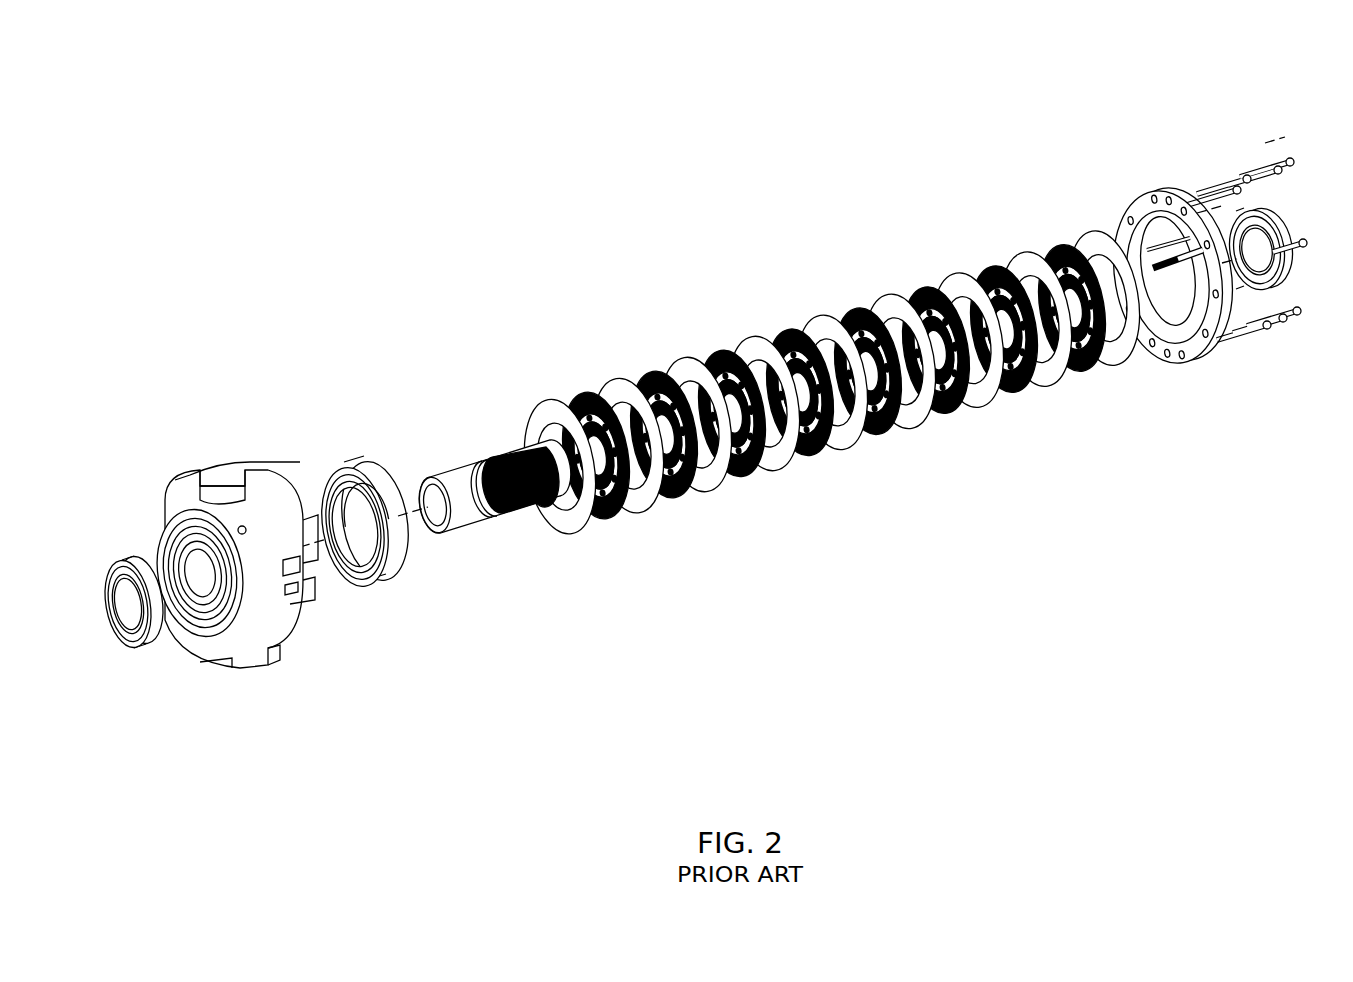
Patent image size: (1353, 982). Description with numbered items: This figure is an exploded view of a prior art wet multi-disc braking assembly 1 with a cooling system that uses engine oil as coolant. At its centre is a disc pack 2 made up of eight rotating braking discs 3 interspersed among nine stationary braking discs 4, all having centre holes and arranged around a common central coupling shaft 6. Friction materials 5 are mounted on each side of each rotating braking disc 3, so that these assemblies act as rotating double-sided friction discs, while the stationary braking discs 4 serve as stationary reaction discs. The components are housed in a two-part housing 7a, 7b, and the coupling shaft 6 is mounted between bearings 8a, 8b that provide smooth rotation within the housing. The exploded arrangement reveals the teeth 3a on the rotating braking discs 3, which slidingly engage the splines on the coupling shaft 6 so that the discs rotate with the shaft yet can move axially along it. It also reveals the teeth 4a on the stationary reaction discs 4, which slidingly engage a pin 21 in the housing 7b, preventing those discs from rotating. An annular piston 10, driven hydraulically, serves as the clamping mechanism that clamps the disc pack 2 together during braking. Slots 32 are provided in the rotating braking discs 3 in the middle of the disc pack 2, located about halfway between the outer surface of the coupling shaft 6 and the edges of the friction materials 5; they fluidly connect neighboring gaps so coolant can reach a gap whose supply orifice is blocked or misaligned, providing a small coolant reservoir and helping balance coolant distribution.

The multi-disc braking assembly 1 is at (312, 156).
The disc pack 2 is at (735, 203).
The rotating braking disc 3 is at (1035, 385).
The teeth 3a is at (878, 438).
The slots 32 is at (730, 463).
The stationary braking disc 4 is at (753, 348).
The teeth 4a is at (1025, 256).
The friction materials 5 is at (1053, 263).
The coupling shaft 6 is at (463, 470).
The housing 7a is at (242, 470).
The housing 7b is at (1213, 348).
The bearing 8a is at (130, 557).
The bearing 8b is at (1273, 222).
The annular piston 10 is at (353, 463).
The pin 21 is at (1167, 233).